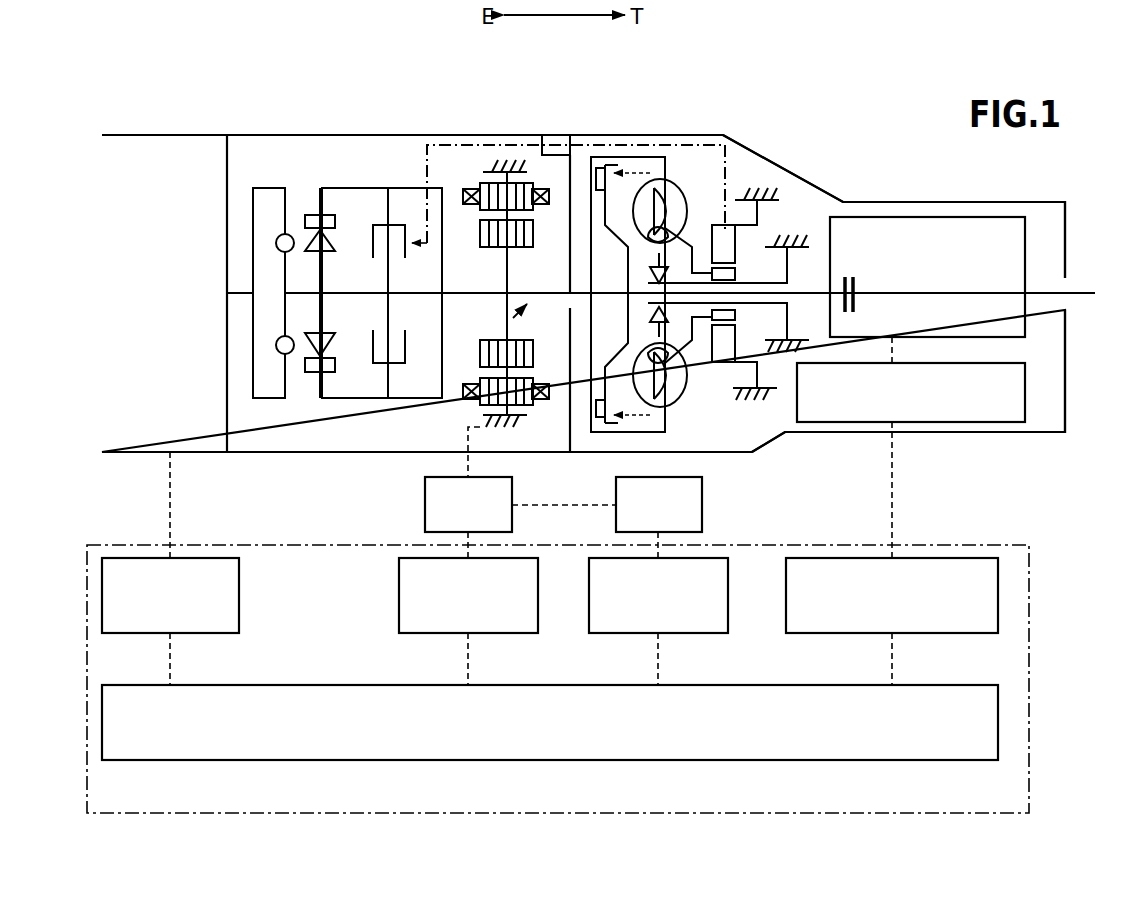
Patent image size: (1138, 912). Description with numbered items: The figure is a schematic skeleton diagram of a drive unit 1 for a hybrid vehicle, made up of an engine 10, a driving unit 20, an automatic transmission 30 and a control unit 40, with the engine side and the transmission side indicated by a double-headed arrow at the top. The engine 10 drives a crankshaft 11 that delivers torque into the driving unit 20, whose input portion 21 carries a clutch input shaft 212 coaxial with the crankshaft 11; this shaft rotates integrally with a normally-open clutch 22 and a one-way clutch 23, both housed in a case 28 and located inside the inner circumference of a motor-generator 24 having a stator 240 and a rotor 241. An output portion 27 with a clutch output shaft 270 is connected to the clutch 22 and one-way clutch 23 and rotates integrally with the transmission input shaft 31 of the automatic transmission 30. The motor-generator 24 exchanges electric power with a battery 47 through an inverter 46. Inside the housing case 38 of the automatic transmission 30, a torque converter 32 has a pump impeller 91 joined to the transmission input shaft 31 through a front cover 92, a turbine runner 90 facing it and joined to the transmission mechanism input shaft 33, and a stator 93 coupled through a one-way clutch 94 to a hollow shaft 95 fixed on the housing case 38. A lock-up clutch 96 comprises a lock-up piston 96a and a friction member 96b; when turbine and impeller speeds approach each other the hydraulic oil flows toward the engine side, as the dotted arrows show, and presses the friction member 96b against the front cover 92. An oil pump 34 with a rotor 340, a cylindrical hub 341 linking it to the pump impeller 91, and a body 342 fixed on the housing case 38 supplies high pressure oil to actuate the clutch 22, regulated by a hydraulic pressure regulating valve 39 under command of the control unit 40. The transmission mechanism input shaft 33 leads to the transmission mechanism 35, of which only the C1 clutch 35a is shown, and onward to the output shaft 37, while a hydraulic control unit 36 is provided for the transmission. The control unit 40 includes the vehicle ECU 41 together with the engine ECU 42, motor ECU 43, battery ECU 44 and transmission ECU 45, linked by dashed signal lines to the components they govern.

The drive unit 1 is at (911, 57).
The engine 10 is at (168, 118).
The crankshaft 11 is at (229, 292).
The driving unit 20 is at (409, 126).
The input portion 21 is at (272, 186).
The clutch 22 is at (373, 244).
The clutch input shaft 212 is at (293, 291).
The one-way clutch 23 is at (304, 214).
The motor-generator 24 is at (473, 182).
The rotor 241 is at (497, 248).
The stator 240 is at (466, 403).
The output portion 27 is at (506, 318).
The clutch output shaft 270 is at (531, 301).
The case 28 is at (348, 453).
The automatic transmission 30 is at (722, 128).
The transmission input shaft 31 is at (580, 290).
The torque converter 32 is at (687, 416).
The transmission mechanism input shaft 33 is at (800, 293).
The oil pump 34 is at (751, 240).
The transmission mechanism 35 is at (940, 216).
The C1 clutch 35a is at (857, 306).
The hydraulic control unit 36 is at (945, 423).
The output shaft 37 is at (1037, 291).
The housing case 38 is at (756, 449).
The hydraulic pressure regulating valve 39 is at (541, 147).
The control unit 40 is at (622, 815).
The ECU 41 is at (893, 761).
The engine ECU 42 is at (239, 600).
The motor ECU 43 is at (500, 634).
The battery ECU 44 is at (690, 634).
The transmission ECU 45 is at (940, 634).
The inverter 46 is at (512, 484).
The battery 47 is at (702, 505).
The turbine runner 90 is at (636, 178).
The pump impeller 91 is at (683, 193).
The front cover 92 is at (590, 416).
The stator 93 is at (676, 248).
The one-way clutch 94 is at (647, 312).
The hollow shaft 95 is at (792, 304).
The lock-up clutch 96 is at (625, 88).
The lock-up piston 96a is at (605, 210).
The friction member 96b is at (598, 167).
The rotor 340 is at (737, 315).
The hub 341 is at (698, 319).
The body 342 is at (737, 250).